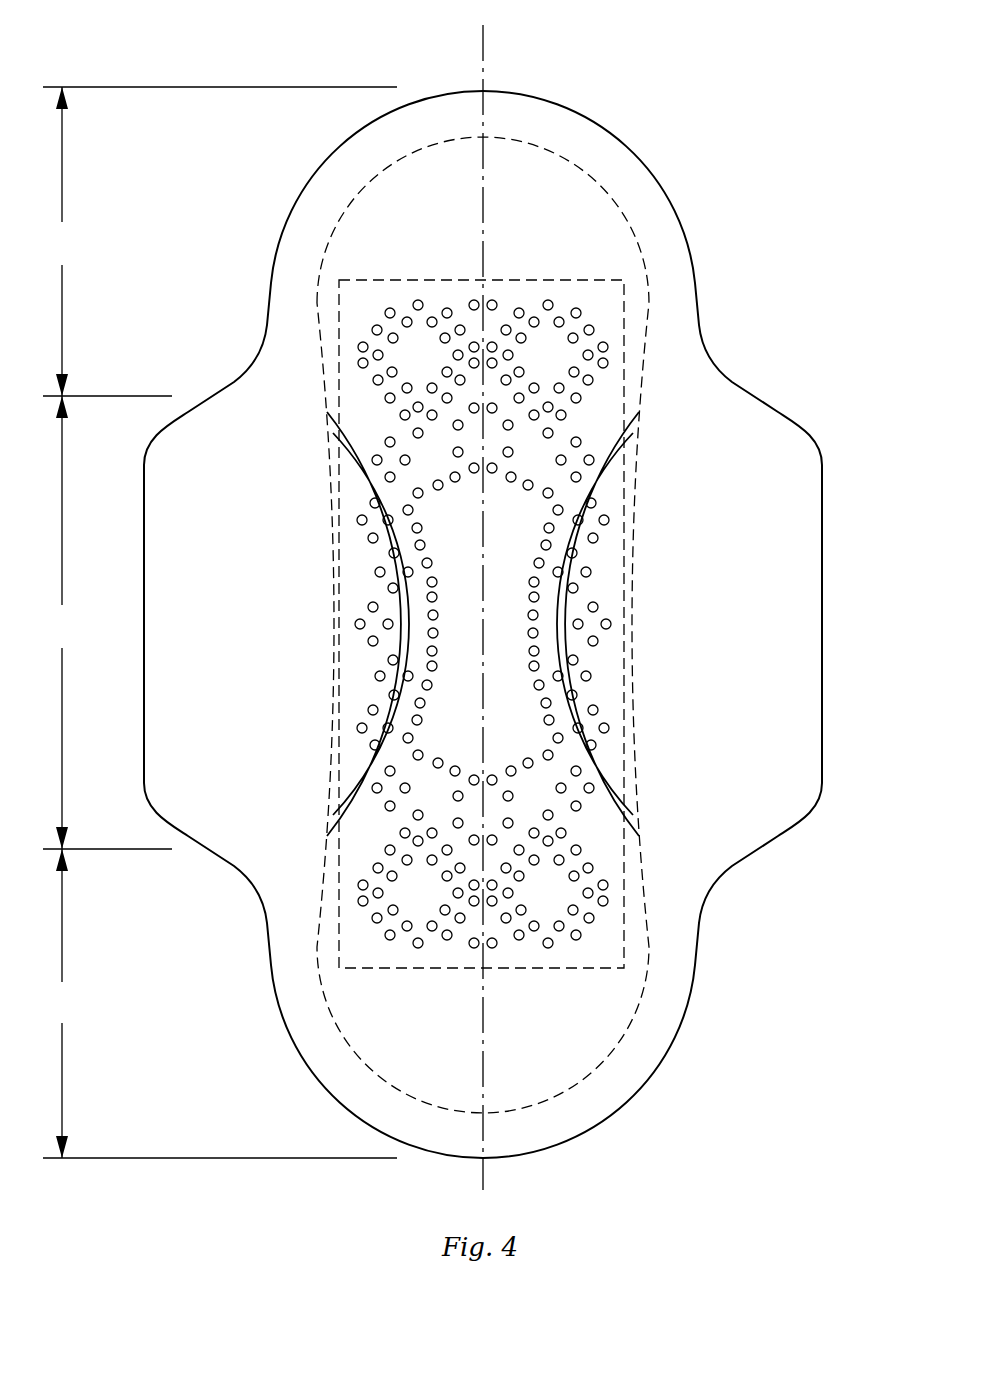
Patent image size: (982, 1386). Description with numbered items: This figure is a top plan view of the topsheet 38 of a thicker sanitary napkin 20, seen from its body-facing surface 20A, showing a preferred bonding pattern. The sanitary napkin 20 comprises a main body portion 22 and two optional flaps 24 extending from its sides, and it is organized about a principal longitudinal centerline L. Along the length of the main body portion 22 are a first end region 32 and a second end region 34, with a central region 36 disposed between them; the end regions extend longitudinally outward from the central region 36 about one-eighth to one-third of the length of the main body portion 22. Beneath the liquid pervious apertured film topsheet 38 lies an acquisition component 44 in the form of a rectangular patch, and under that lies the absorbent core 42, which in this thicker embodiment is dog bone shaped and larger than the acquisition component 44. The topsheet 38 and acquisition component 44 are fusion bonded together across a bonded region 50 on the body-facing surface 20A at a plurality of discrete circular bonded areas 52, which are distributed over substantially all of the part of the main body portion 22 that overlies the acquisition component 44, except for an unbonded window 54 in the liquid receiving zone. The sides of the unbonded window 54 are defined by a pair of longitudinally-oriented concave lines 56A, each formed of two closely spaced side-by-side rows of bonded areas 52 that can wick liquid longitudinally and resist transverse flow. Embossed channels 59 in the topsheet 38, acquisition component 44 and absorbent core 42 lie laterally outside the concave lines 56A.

The sanitary napkin 20 is at (512, 598).
The body-facing surface 20A is at (460, 172).
The main body portion 22 is at (560, 92).
The flaps 24 is at (777, 392).
The first end region 32 is at (220, 241).
The second end region 34 is at (220, 1003).
The central region 36 is at (107, 622).
The topsheet 38 is at (357, 238).
The absorbent core 42 is at (601, 1061).
The acquisition component 44 is at (621, 931).
The bonded region 50 is at (611, 596).
The bonded areas 52 is at (446, 941).
The unbonded window 54 is at (510, 726).
The longitudinally-oriented concave lines 56A is at (535, 618).
The embossed channels 59 is at (366, 485).
The principal longitudinal centerline L is at (485, 38).